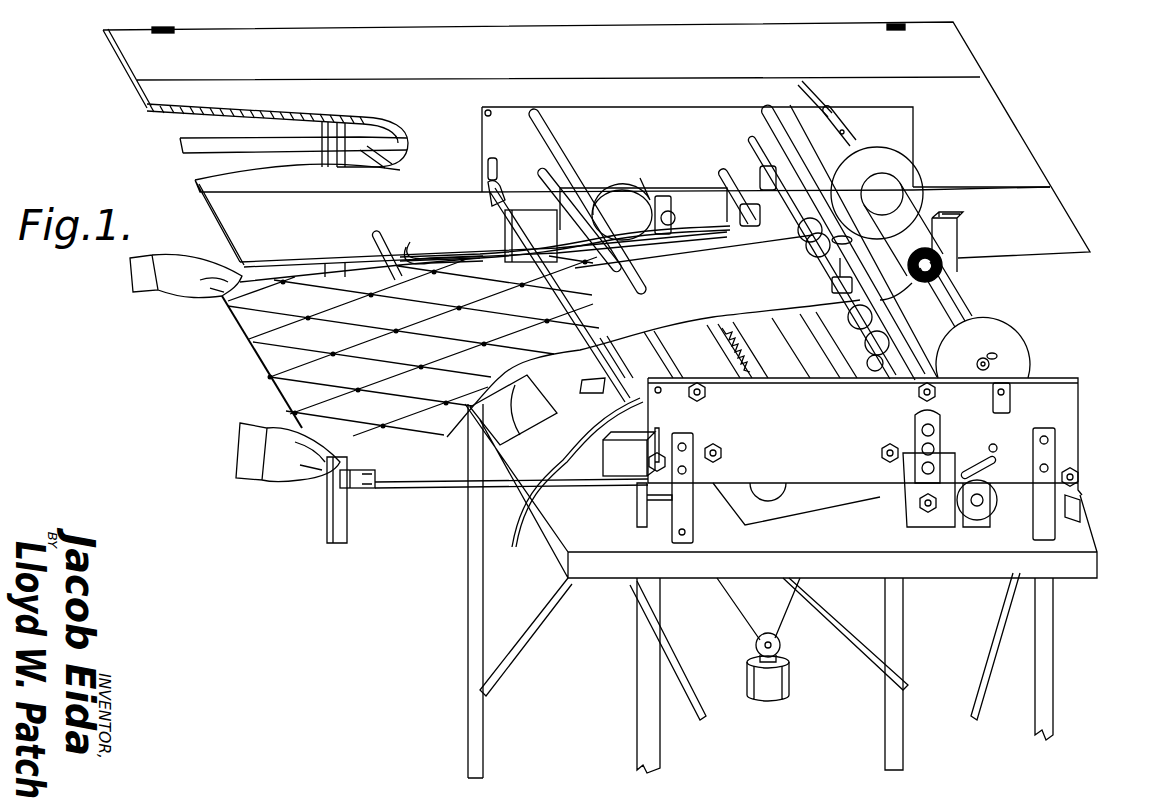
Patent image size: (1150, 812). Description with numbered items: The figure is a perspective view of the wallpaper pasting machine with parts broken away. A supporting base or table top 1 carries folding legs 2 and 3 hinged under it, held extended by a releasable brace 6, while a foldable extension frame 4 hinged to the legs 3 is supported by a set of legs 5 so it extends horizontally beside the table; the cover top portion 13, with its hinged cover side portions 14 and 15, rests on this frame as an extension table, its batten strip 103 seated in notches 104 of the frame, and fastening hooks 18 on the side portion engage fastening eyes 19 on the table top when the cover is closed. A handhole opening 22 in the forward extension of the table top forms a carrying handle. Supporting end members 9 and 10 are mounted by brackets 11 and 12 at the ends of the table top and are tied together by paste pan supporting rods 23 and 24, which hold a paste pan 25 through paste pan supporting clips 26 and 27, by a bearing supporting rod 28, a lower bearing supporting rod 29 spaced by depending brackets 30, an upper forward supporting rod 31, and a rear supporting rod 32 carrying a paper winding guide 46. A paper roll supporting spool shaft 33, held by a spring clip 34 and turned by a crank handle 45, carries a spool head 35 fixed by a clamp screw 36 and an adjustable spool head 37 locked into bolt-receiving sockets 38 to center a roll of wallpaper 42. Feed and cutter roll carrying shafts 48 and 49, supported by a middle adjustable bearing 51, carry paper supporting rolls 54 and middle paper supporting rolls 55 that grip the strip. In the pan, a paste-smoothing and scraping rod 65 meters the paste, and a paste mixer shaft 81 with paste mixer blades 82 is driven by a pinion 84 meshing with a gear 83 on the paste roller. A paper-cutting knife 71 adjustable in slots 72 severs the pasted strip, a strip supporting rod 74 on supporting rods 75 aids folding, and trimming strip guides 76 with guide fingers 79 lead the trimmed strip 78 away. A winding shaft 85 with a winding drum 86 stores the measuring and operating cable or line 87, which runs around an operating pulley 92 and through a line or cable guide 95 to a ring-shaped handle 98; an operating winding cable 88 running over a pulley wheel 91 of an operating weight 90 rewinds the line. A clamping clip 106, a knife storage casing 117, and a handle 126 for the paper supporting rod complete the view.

The supporting base or table top 1 is at (781, 491).
The folding legs 2 is at (638, 692).
The folding legs 3 is at (468, 703).
The foldable extension frame 4 is at (372, 163).
The set of legs 5 is at (327, 507).
The releasable brace 6 is at (628, 592).
The supporting end member 9 is at (865, 436).
The supporting end member 10 is at (697, 149).
The bracket 11 is at (693, 516).
The bracket 12 is at (512, 239).
The cover top portion 13 is at (446, 133).
The cover side portion 14 is at (596, 140).
The cover side portion 15 is at (622, 214).
The fastening hooks 18 is at (163, 28).
The fastening eyes 19 is at (1082, 507).
The handhole opening 22 is at (530, 406).
The paste pan supporting rod 23 is at (542, 177).
The paste pan supporting rod 24 is at (728, 175).
The paste pan 25 is at (752, 350).
The paste pan supporting clip 26 is at (531, 236).
The paste pan supporting clip 27 is at (740, 211).
The bearing supporting rod 28 is at (777, 136).
The lower bearing supporting rod 29 is at (868, 381).
The depending brackets 30 is at (918, 512).
The upper forward supporting rod 31 is at (548, 139).
The rear supporting rod 32 is at (963, 289).
The paper roll supporting spool shaft 33 is at (950, 303).
The spring clip 34 is at (1012, 400).
The spool head 35 is at (1012, 346).
The clamp screw 36 is at (1000, 361).
The adjustable spool head 37 is at (913, 190).
The bolt-receiving sockets 38 is at (852, 139).
The roll of wallpaper 42 is at (909, 274).
The crank handle 45 is at (818, 99).
The paper winding guide 46 is at (958, 235).
The feed and cutter roll carrying shaft 48 is at (754, 144).
The feed and cutter roll carrying shaft 49 is at (762, 181).
The middle adjustable bearing 51 is at (832, 286).
The paper supporting rolls 54 is at (803, 243).
The middle paper supporting rolls 55 is at (880, 325).
The paste-smoothing and scraping rod 65 is at (675, 346).
The paper-cutting knife 71 is at (490, 199).
The slots 72 is at (487, 164).
The strip supporting rod 74 is at (376, 243).
The supporting rods 75 is at (439, 241).
The trimming strip guides 76 is at (636, 235).
The trimmed strip 78 is at (487, 257).
The guide fingers 79 is at (671, 216).
The paste mixer shaft 81 is at (770, 371).
The paste mixer blades 82 is at (745, 329).
The gear 83 is at (625, 186).
The pinion 84 is at (661, 196).
The winding shaft 85 is at (972, 519).
The winding drum 86 is at (991, 514).
The measuring and operating cable or line 87 is at (423, 489).
The operating winding cable 88 is at (730, 611).
The operating weight 90 is at (790, 684).
The pulley wheel 91 is at (767, 632).
The operating pulley 92 is at (766, 489).
The line or cable guide 95 is at (634, 496).
The ring-shaped handle 98 is at (374, 488).
The batten strip 103 is at (180, 145).
The notches 104 is at (375, 126).
The clamping clip 106 is at (593, 381).
The knife storage casing 117 is at (600, 448).
The handle 126 is at (987, 452).